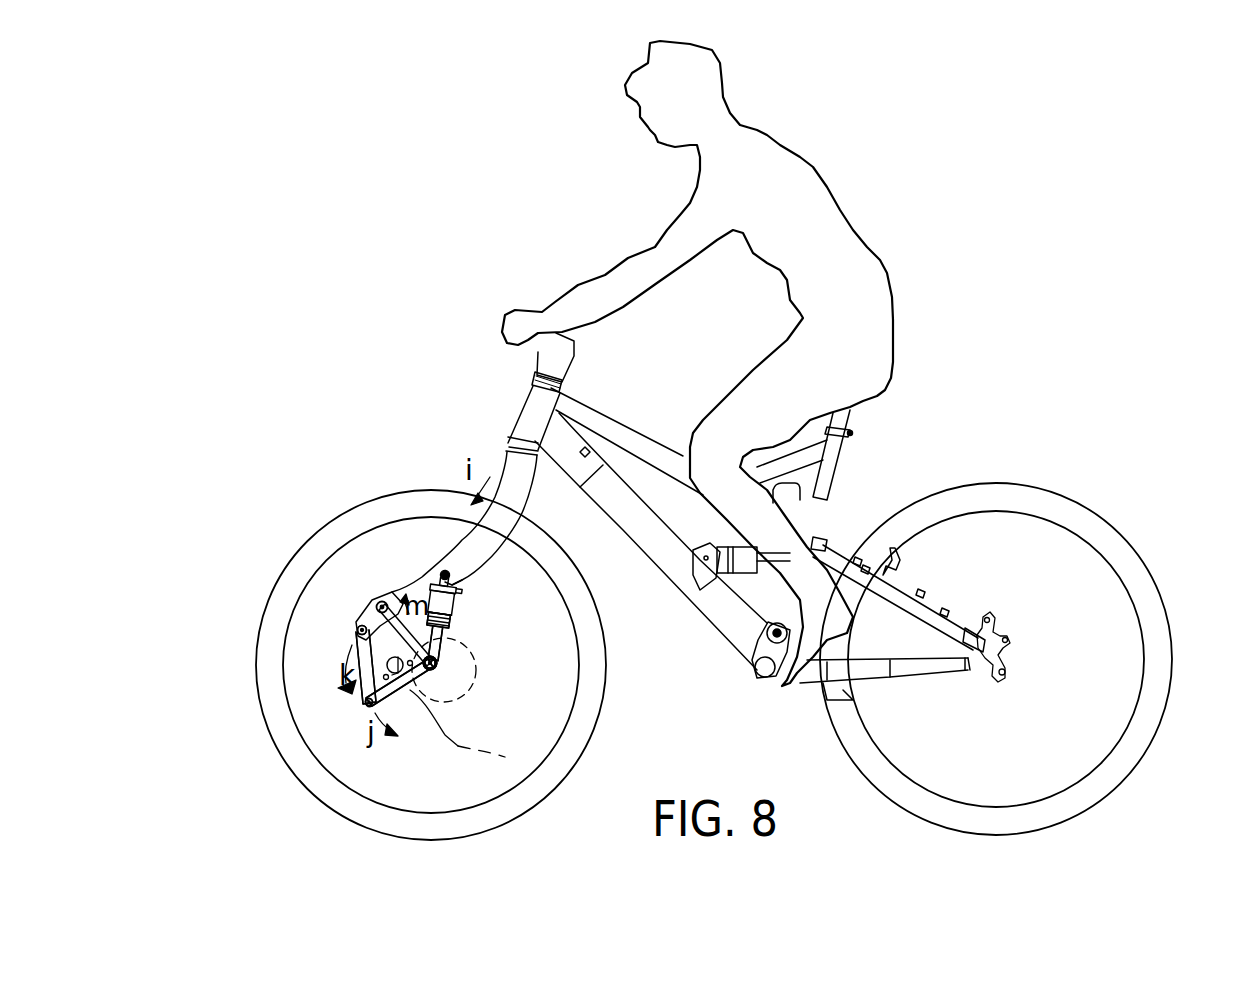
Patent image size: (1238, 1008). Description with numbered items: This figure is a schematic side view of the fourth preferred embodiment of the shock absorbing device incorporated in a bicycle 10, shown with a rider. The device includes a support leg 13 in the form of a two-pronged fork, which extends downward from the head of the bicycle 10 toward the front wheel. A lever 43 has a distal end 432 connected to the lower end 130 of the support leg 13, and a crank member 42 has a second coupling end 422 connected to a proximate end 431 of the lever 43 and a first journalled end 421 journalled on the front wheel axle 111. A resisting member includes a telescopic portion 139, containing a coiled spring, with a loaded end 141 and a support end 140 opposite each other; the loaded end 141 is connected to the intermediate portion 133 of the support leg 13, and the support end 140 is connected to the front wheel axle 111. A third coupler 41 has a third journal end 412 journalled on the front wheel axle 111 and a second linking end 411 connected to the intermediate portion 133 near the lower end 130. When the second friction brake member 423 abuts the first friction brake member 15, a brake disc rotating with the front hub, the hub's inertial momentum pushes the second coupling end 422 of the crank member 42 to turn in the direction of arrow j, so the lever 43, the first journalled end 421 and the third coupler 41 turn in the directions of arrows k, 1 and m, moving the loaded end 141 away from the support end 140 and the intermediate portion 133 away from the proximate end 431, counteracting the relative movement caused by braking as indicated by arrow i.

The bicycle 10 is at (957, 462).
The support leg 13 is at (468, 515).
The intermediate portion 133 is at (463, 547).
The loaded end 141 is at (452, 606).
The telescopic portion 139 is at (447, 618).
The support end 140 is at (440, 647).
The front wheel axle 1 is at (444, 674).
The third coupler 41 is at (384, 604).
The second linking end 411 is at (378, 606).
The second friction brake member 423 is at (362, 628).
The lever 43 is at (352, 690).
The lower end 130 is at (360, 628).
The distal end 432 is at (360, 628).
The crank member 42 is at (410, 690).
The second coupling end 422 is at (365, 703).
The proximate end 431 is at (365, 703).
The front wheel axle 111 is at (422, 695).
The first journalled end 421 is at (422, 695).
The third journal end 412 is at (422, 695).
The first friction brake member 15 is at (505, 757).